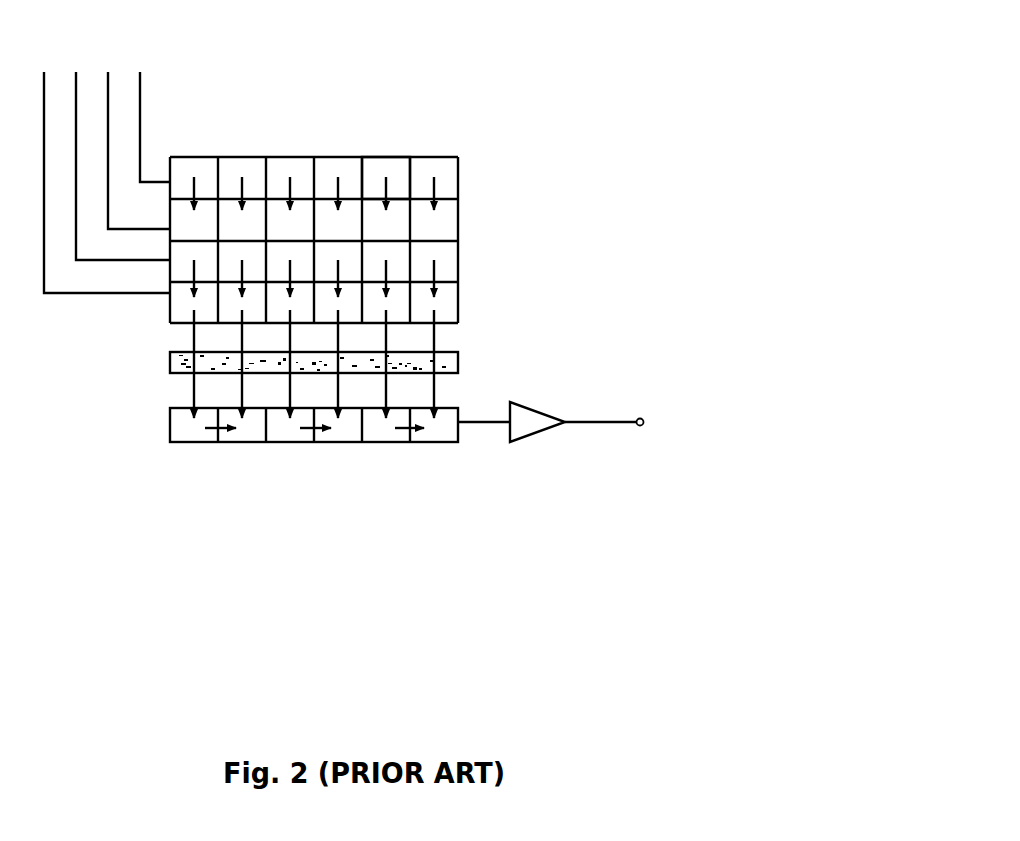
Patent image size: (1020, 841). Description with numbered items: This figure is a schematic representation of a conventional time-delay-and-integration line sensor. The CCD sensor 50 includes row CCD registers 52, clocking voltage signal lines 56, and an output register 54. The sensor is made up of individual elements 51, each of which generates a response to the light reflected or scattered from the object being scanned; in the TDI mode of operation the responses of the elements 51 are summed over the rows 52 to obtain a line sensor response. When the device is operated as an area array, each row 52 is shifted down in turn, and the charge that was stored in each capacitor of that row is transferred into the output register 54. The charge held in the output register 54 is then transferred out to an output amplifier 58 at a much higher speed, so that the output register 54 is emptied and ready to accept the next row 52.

The CCD sensor 50 is at (573, 180).
The element 51 is at (383, 163).
The row CCD register 52 is at (459, 182).
The output register 54 is at (436, 436).
The clocking voltage signal line 56 is at (46, 117).
The output amplifier 58 is at (548, 438).